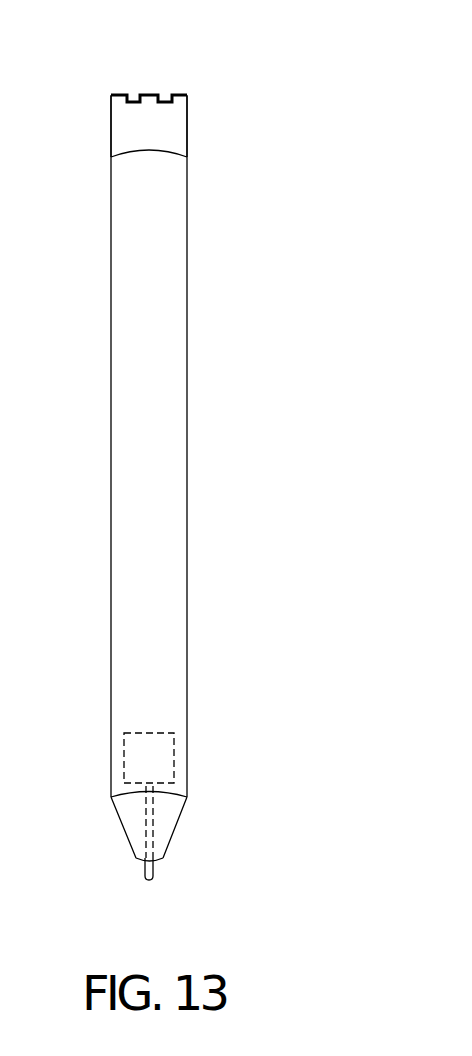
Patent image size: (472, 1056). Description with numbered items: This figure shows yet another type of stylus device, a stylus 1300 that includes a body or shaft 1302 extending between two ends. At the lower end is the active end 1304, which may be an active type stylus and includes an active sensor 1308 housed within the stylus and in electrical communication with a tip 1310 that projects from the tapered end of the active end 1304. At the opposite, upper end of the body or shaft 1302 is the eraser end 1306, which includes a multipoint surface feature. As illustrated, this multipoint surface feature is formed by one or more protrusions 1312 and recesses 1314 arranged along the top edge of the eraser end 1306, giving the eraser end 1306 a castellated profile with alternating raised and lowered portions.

The stylus 1300 is at (208, 465).
The body or shaft 1302 is at (177, 280).
The active end 1304 is at (163, 837).
The eraser end 1306 is at (175, 130).
The active sensor 1308 is at (160, 760).
The tip 1310 is at (148, 875).
The protrusions 1312 is at (178, 95).
The recesses 1314 is at (128, 103).